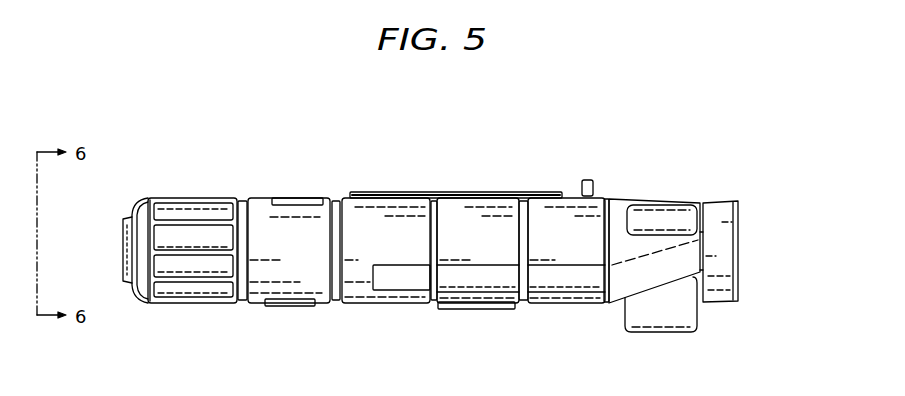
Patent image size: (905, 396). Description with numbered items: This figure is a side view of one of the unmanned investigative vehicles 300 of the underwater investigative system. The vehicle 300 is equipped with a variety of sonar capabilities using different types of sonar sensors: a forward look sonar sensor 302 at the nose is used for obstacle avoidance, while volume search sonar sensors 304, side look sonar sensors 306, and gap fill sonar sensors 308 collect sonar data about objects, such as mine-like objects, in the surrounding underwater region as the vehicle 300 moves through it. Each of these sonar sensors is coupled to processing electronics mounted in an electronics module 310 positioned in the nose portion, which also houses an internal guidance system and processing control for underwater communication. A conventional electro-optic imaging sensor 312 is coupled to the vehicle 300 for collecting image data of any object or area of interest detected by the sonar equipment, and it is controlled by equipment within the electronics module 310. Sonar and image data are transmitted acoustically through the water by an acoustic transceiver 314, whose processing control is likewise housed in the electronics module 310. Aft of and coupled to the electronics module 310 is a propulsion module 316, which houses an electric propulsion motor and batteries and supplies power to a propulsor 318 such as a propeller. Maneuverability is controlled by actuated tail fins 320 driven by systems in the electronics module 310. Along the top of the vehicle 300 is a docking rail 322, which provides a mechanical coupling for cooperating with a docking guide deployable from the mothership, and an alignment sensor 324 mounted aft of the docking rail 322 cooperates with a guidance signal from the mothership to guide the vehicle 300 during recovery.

The investigative vehicle 300 is at (358, 127).
The forward look sonar sensor 302 is at (124, 250).
The volume search sonar sensors 304 is at (193, 232).
The side look sonar sensors 306 is at (389, 277).
The gap fill sonar sensors 308 is at (465, 309).
The electronics module 310 is at (258, 211).
The electro-optic imaging sensor 312 is at (285, 306).
The acoustic transceiver 314 is at (297, 203).
The propulsion module 316 is at (470, 213).
The propulsor 318 is at (735, 243).
The actuated tail fins 320 is at (662, 213).
The docking rail 322 is at (421, 193).
The alignment sensor 324 is at (586, 180).